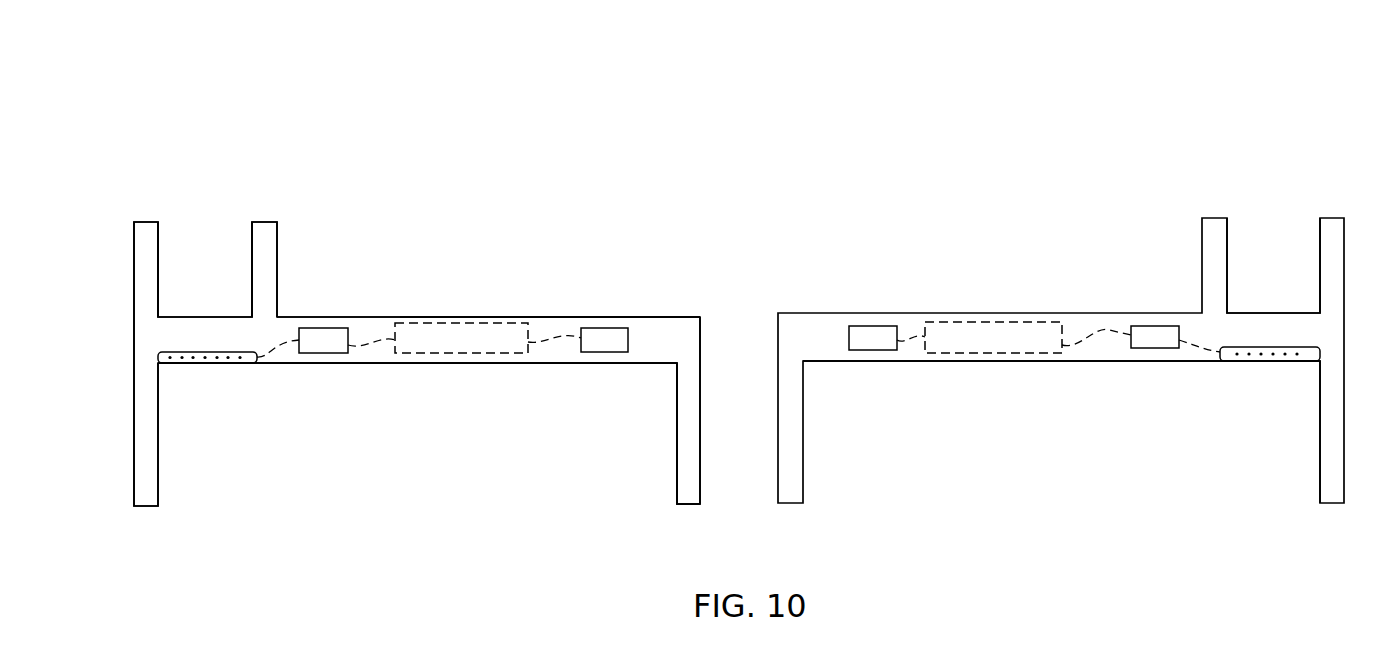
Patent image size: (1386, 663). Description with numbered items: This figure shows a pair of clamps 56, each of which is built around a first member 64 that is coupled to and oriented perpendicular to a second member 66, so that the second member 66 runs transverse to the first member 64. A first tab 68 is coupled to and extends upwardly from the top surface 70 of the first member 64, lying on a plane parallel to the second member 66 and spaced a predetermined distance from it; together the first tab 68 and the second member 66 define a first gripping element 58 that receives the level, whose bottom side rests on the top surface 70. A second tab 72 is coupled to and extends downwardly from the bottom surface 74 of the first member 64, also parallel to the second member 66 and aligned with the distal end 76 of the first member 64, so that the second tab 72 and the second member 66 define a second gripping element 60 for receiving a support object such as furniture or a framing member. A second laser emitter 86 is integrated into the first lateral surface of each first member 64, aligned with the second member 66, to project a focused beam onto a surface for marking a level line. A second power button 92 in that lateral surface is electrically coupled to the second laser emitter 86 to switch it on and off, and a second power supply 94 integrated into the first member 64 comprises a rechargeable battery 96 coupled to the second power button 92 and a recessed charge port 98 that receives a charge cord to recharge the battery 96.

The clamp 56 is at (659, 207).
The first gripping element 58 is at (204, 213).
The second gripping element 60 is at (416, 407).
The first member 64 is at (460, 316).
The second member 66 is at (134, 332).
The first tab 68 is at (277, 222).
The top surface 70 is at (546, 300).
The second tab 72 is at (677, 450).
The bottom surface 74 is at (515, 380).
The distal end 76 is at (700, 330).
The second laser emitter 86 is at (228, 363).
The second power button 92 is at (348, 328).
The second power supply 94 is at (415, 350).
The rechargeable battery 96 is at (954, 370).
The charge port 98 is at (603, 338).